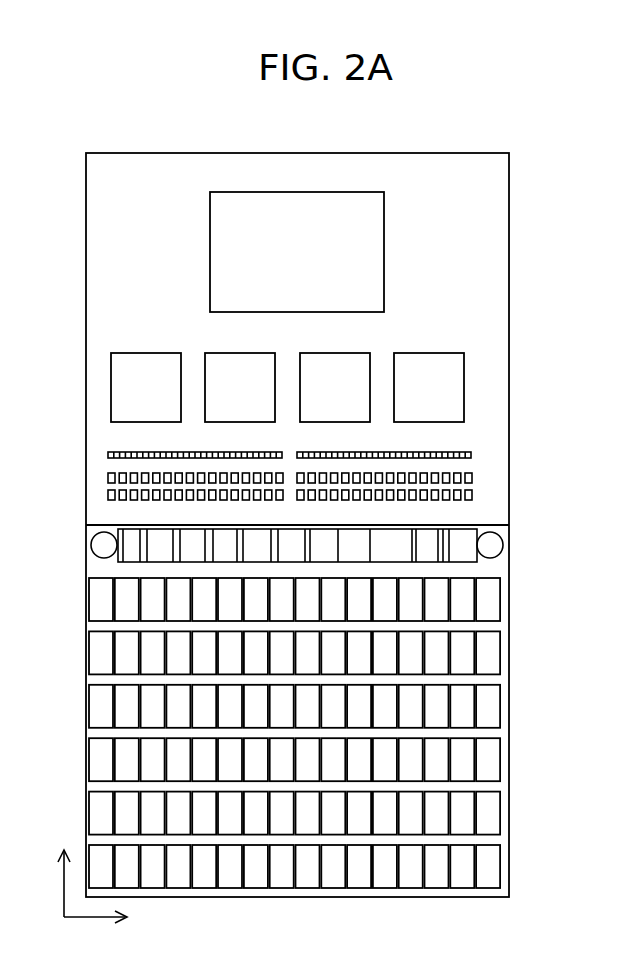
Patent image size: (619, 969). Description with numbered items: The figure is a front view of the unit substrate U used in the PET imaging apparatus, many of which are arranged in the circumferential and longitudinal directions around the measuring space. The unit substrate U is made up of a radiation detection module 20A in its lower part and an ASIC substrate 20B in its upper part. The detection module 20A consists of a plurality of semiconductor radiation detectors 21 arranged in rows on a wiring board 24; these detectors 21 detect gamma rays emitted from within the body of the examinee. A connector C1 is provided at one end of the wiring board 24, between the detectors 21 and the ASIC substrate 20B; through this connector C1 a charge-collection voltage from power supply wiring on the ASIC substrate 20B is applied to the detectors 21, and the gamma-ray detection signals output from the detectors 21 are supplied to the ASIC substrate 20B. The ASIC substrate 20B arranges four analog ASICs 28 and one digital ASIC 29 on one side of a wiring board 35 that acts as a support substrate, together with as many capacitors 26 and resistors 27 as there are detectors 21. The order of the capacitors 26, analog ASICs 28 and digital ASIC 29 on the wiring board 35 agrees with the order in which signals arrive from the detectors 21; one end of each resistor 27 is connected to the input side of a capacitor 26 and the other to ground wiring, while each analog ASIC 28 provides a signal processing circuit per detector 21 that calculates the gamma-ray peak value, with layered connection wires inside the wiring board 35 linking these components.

The unit substrate U is at (292, 150).
The wiring board 35 is at (496, 186).
The digital ASIC 29 is at (372, 247).
The ASIC substrate 20B is at (512, 316).
The analog ASIC 28 is at (454, 392).
The resistor 27 is at (471, 455).
The capacitor 26 is at (471, 496).
The radiation detection module 20A is at (74, 662).
The connector C1 is at (462, 548).
The wiring board 24 is at (495, 735).
The semiconductor radiation detector 21 is at (495, 662).